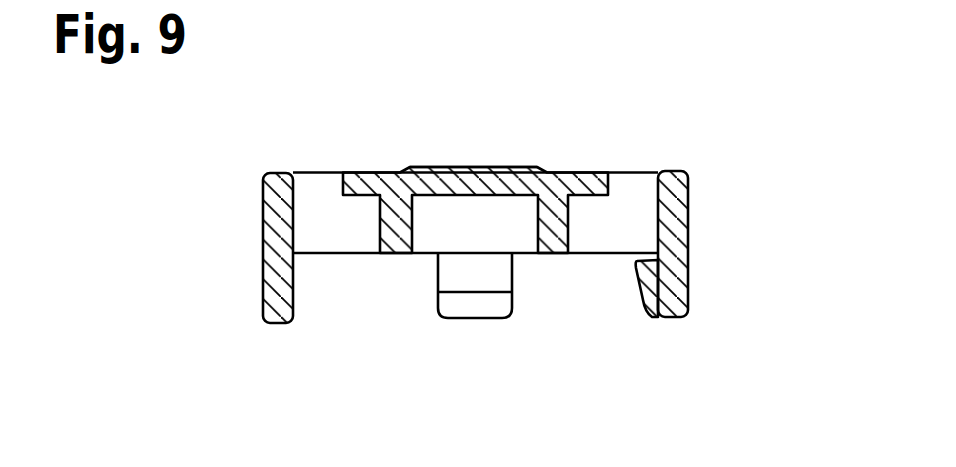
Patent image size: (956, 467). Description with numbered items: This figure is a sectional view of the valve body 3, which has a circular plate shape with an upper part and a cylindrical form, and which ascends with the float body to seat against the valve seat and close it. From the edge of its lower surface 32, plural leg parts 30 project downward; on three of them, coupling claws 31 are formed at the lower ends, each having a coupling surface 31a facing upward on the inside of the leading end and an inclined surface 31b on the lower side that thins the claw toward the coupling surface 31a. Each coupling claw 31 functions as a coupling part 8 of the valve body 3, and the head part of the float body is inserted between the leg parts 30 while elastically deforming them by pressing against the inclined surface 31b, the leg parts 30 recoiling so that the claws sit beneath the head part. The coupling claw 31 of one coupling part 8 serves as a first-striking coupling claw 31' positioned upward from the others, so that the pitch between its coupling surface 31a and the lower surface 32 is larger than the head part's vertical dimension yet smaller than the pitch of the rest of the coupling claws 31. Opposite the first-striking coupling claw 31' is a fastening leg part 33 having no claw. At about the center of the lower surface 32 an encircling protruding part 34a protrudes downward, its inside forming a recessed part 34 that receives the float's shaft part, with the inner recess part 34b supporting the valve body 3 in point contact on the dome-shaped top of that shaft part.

The valve body 3 is at (690, 199).
The coupling part 8 is at (654, 273).
The leg part 30 is at (262, 237).
The coupling claw 31 is at (673, 288).
The first-striking coupling claw 31' is at (662, 289).
The coupling surface 31a is at (652, 256).
The inclined surface 31b is at (460, 312).
The lower surface 32 is at (347, 196).
The fastening leg part 33 is at (262, 303).
The recessed part 34 is at (492, 215).
The encircling protruding part 34a is at (393, 230).
The inner recess part 34b is at (453, 201).